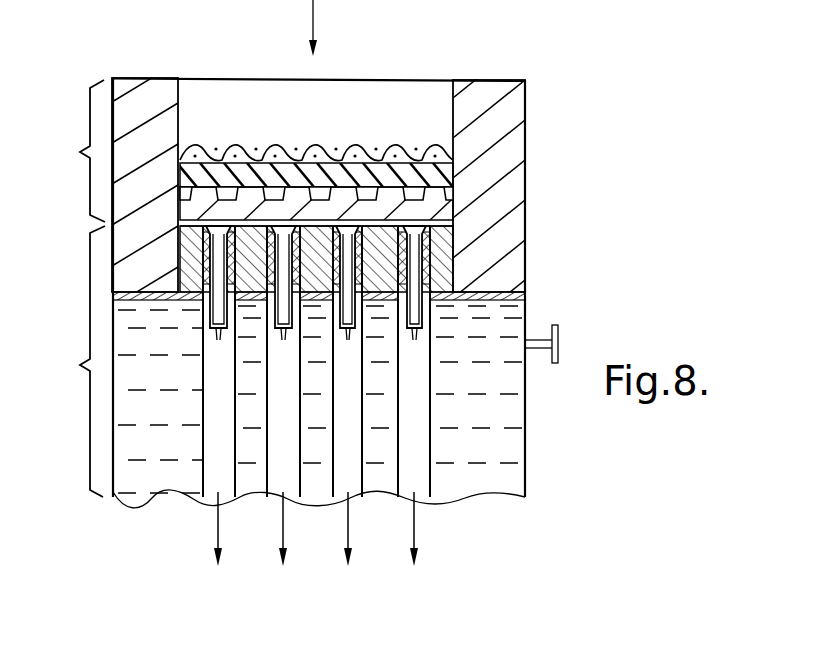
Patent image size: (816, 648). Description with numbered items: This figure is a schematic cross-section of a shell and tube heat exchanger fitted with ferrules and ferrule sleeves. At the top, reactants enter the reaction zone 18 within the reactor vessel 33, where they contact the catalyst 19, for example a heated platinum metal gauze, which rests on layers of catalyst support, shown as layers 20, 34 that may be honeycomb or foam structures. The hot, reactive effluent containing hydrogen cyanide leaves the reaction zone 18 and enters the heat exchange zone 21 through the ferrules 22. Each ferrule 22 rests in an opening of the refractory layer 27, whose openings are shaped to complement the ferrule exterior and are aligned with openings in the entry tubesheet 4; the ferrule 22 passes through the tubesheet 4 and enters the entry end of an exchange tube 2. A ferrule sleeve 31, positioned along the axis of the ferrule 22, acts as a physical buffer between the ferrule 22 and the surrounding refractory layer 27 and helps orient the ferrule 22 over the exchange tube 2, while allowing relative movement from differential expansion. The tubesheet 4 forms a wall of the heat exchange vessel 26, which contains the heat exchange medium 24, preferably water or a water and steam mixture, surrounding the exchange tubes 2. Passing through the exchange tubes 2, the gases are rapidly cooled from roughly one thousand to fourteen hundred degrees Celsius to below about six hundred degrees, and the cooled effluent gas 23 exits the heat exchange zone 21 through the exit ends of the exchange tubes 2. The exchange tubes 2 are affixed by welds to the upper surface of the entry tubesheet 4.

The exchange tubes 2 is at (430, 398).
The entry tubesheet 4 is at (525, 298).
The reaction zone 18 is at (195, 88).
The catalyst 19 is at (367, 148).
The catalyst support layer 20 is at (455, 182).
The heat exchange zone 21 is at (286, 361).
The ferrules 22 is at (286, 336).
The cooled effluent gas 23 is at (316, 555).
The heat exchange medium 24 is at (184, 443).
The heat exchange vessel 26 is at (525, 462).
The refractory layer 27 is at (455, 260).
The ferrule sleeve 31 is at (222, 218).
The reactor vessel 33 is at (76, 151).
The catalyst support layer 34 is at (428, 210).